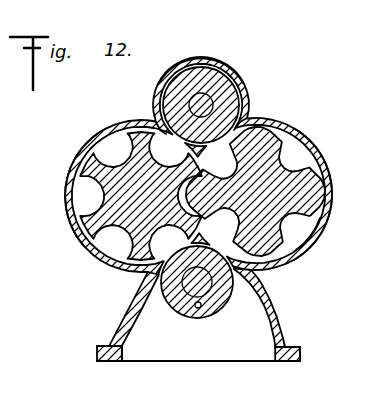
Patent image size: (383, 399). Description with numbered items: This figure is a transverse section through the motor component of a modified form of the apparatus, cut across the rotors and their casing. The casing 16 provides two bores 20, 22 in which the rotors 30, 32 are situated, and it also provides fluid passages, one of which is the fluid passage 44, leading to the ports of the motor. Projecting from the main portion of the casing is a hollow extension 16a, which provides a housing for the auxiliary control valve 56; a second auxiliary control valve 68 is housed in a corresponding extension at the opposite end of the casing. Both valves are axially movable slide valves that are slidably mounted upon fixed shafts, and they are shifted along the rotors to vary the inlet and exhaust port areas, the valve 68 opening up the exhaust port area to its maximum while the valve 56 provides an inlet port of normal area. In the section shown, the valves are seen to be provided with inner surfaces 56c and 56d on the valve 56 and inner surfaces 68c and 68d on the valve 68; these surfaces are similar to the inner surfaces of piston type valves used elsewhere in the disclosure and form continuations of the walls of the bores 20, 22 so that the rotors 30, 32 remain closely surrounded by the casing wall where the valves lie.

The casing 16 is at (312, 145).
The hollow extension 16a is at (246, 90).
The bore 20 is at (295, 240).
The bore 22 is at (114, 132).
The rotor 30 is at (305, 191).
The rotor 32 is at (107, 184).
The fluid passage 44 is at (204, 347).
The auxiliary control valve 56 is at (222, 80).
The inner surface 56c is at (153, 120).
The inner surface 56d is at (243, 118).
The auxiliary control valve 68 is at (233, 293).
The inner surface 68c is at (155, 275).
The inner surface 68d is at (262, 272).